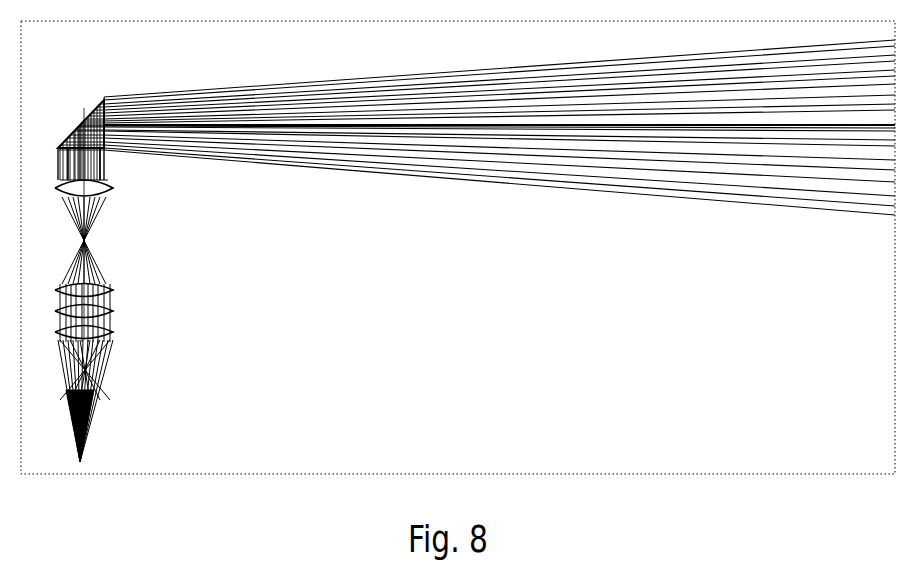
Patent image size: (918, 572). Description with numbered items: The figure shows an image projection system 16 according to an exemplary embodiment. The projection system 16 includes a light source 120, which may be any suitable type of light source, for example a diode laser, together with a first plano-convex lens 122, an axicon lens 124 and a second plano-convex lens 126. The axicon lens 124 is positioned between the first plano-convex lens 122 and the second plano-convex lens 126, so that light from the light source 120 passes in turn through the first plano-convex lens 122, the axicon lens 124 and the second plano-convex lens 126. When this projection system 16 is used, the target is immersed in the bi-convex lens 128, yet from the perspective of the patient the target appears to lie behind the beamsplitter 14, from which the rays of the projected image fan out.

The beamsplitter 14 is at (102, 100).
The projection system 16 is at (200, 471).
The light source 120 is at (86, 466).
The first plano-convex lens 122 is at (116, 333).
The axicon lens 124 is at (118, 307).
The second plano-convex lens 126 is at (110, 290).
The bi-convex lens 128 is at (117, 188).